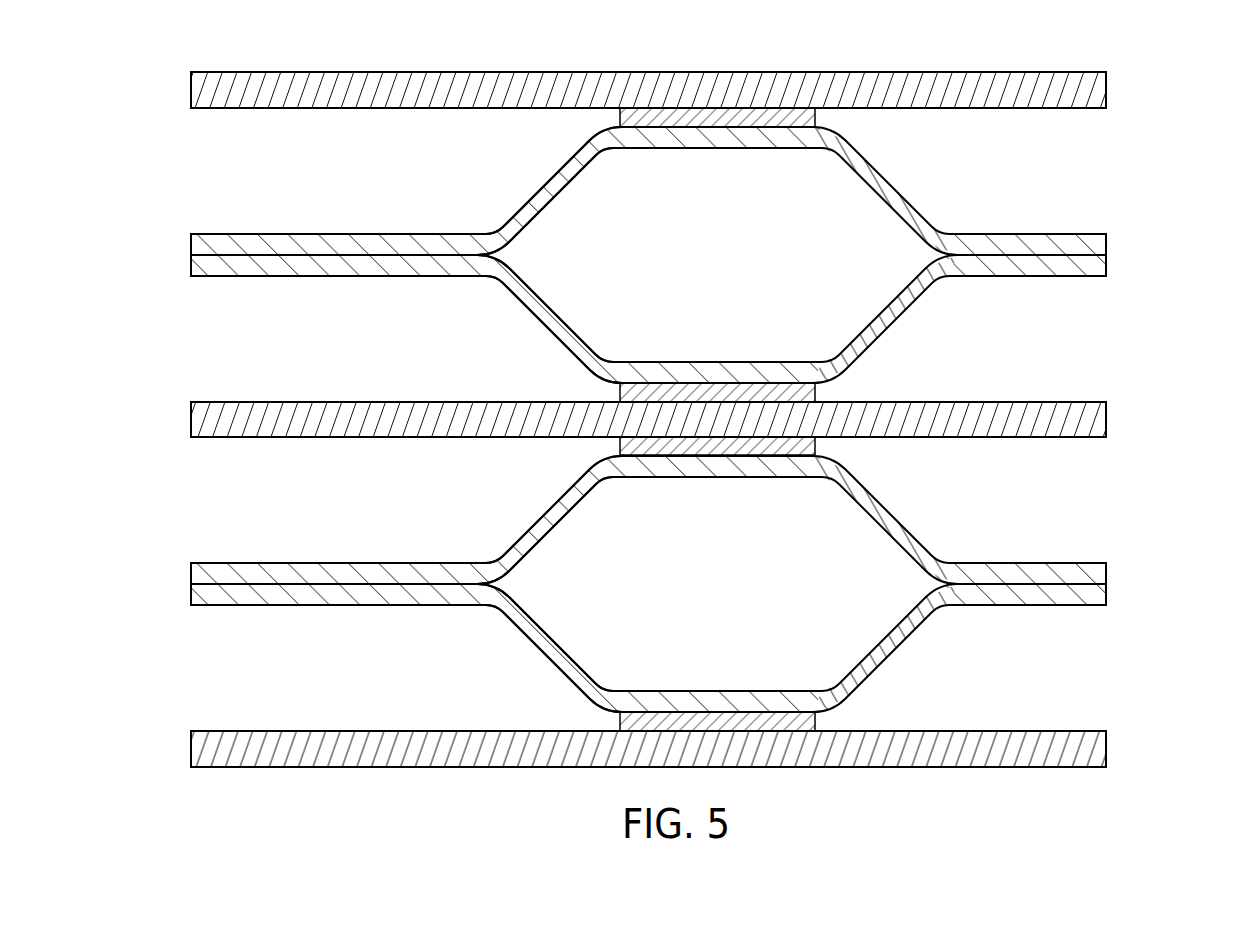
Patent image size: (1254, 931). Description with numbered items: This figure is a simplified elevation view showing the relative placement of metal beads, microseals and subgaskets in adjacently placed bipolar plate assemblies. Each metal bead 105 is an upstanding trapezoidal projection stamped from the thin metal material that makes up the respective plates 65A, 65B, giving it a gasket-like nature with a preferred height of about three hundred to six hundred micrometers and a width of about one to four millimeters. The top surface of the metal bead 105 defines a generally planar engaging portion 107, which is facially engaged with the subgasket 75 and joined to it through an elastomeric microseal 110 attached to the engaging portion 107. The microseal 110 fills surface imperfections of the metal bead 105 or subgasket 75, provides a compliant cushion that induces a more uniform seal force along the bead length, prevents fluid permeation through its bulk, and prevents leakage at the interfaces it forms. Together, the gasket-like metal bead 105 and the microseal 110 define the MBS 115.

The subgasket 75 is at (1106, 92).
The plate 65A is at (1108, 268).
The plate 65B is at (1108, 242).
The metal bead 105 is at (572, 186).
The engaging portion 107 is at (620, 110).
The microseal 110 is at (815, 118).
The MBS 115 is at (469, 110).